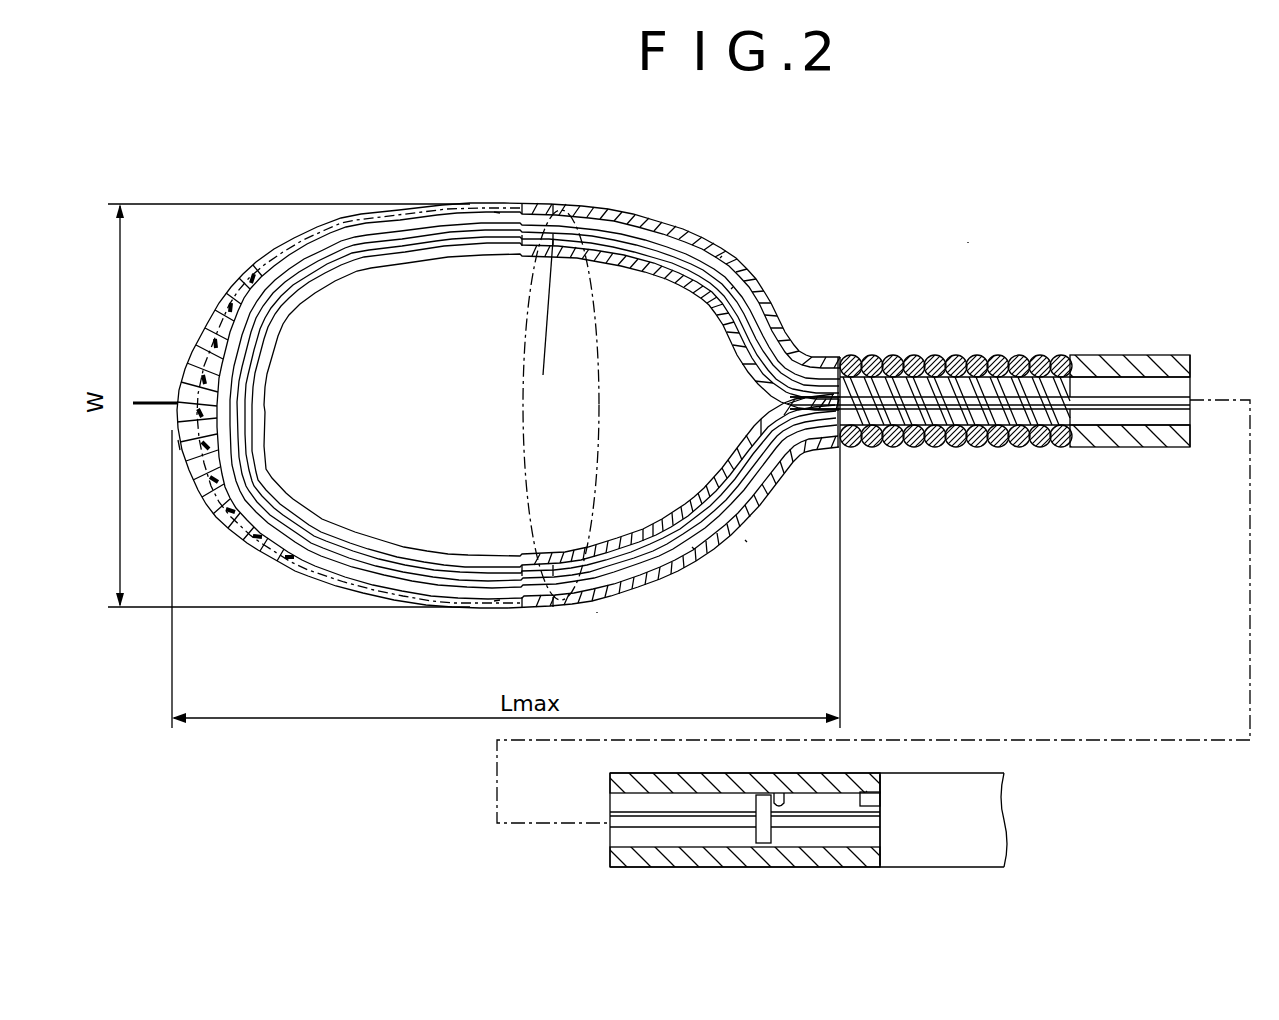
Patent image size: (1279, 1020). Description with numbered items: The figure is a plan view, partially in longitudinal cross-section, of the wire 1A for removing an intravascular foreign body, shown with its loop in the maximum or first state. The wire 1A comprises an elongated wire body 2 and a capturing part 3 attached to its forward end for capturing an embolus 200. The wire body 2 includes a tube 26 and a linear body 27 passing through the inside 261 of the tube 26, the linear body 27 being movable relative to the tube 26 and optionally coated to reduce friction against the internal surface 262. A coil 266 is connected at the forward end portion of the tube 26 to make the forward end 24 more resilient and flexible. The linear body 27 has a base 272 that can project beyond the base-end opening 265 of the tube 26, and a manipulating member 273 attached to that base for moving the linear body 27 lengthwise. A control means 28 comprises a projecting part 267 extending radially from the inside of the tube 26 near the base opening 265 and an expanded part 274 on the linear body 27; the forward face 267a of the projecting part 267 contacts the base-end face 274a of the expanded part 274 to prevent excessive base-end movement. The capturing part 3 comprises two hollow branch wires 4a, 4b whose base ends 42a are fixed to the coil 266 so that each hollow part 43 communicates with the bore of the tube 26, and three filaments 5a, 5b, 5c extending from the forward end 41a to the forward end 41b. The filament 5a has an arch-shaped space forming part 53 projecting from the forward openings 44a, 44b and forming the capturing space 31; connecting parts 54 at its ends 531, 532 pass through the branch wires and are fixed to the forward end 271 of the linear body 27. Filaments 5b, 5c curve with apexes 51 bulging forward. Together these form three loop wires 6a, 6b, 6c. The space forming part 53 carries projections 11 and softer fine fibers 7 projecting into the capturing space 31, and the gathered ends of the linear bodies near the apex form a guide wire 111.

The wire for removing an intravascular foreign body 1A is at (968, 242).
The wire body 2 is at (1103, 285).
The capturing part 3 is at (597, 612).
The branch wire 4a is at (668, 577).
The branch wire 4b is at (690, 240).
The filament 5a is at (242, 517).
The filament 5b is at (272, 335).
The filament 5c is at (288, 450).
The loop wire 6a is at (182, 450).
The loop wire 6b is at (270, 424).
The loop wire 6c is at (257, 393).
The fine fiber 7 is at (248, 401).
The projection 11 is at (250, 365).
The forward end 24 is at (1105, 350).
The tube 26 is at (680, 782).
The linear body 27 is at (1100, 388).
The control means 28 is at (872, 788).
The capturing space 31 is at (553, 240).
The forward end of branch wire 4a 41a is at (550, 610).
The forward end of branch wire 4b 41b is at (535, 207).
The base end of branch wire 4a 42a is at (822, 433).
The hollow part 43 is at (722, 256).
The forward opening of branch wire 4a 44a is at (508, 607).
The forward opening of branch wire 4b 44b is at (513, 210).
The apex 51 is at (190, 392).
The space forming part 53 is at (250, 272).
The connecting part 54 is at (733, 287).
The guide wire 111 is at (180, 432).
The embolus 200 is at (603, 207).
The inside of the tube 261 is at (1180, 384).
The internal surface of the tube 262 is at (1180, 405).
The base-end opening 265 is at (883, 838).
The coil 266 is at (973, 356).
The projecting part 267 is at (875, 800).
The face at the forward end side of the projecting part 267a is at (860, 802).
The forward end of the linear body 271 is at (893, 400).
The base 272 is at (800, 822).
The manipulating member 273 is at (965, 845).
The expanded part 274 is at (762, 842).
The face at the base end side of the expanded part 274a is at (778, 800).
The end of the space forming part 531 is at (500, 605).
The end of the space forming part 532 is at (500, 218).